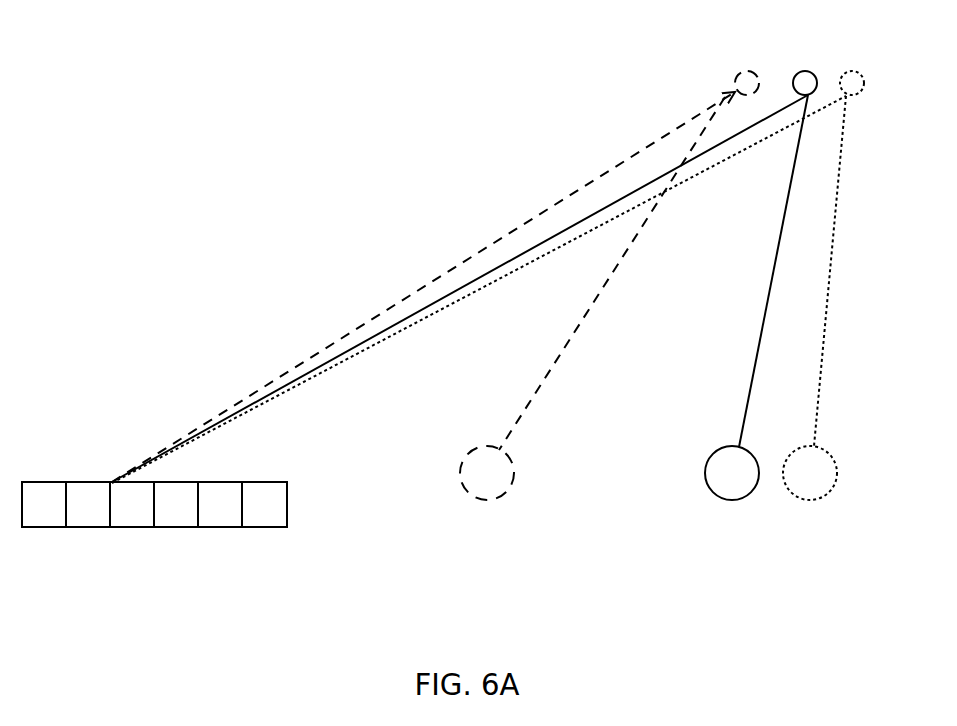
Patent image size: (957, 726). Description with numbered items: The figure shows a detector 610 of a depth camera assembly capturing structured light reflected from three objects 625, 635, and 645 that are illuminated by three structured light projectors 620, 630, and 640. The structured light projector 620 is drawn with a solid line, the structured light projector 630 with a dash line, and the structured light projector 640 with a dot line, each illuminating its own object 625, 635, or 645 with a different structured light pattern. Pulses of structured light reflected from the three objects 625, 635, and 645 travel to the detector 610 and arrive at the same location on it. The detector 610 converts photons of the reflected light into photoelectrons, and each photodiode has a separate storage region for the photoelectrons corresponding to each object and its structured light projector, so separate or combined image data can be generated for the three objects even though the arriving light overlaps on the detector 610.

The detector 610 is at (50, 473).
The structured light projector 620 is at (723, 497).
The object 625 is at (782, 59).
The structured light projector 630 is at (490, 498).
The object 635 is at (713, 59).
The structured light projector 640 is at (817, 498).
The object 645 is at (842, 59).